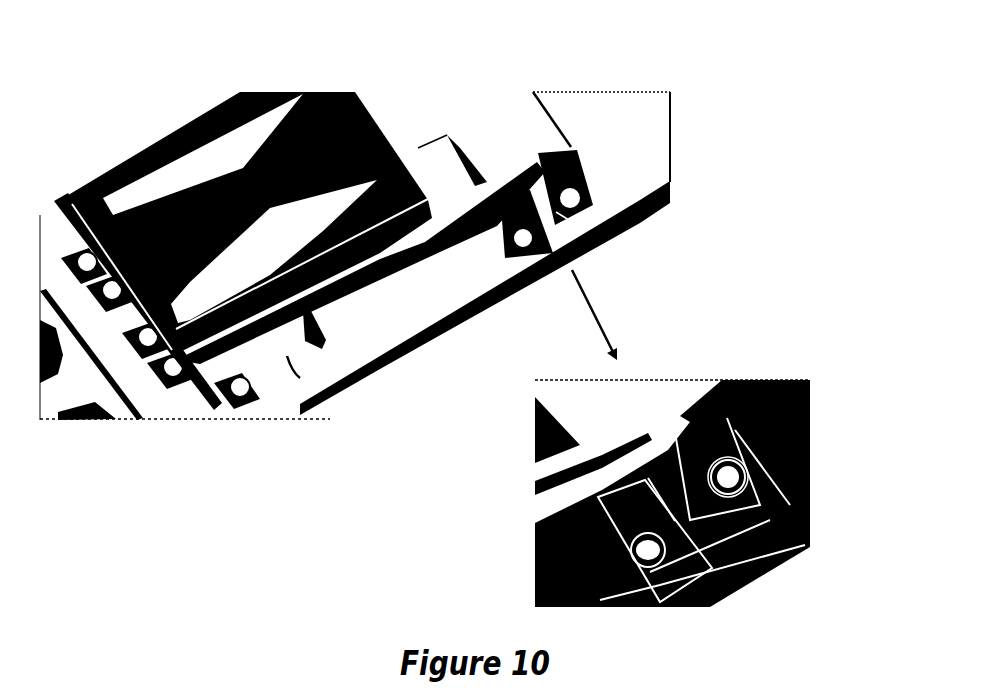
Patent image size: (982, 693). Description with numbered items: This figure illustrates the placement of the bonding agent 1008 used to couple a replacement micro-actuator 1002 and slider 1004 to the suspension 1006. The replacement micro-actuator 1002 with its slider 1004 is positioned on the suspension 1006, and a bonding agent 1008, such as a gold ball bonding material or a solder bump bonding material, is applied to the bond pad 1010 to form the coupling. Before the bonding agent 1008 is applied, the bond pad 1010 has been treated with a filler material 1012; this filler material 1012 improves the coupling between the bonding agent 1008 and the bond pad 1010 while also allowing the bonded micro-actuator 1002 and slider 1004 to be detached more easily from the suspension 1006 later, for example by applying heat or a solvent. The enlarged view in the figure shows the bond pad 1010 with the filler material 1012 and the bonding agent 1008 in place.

The replacement micro-actuator 1002 is at (465, 98).
The slider 1004 is at (323, 100).
The suspension 1006 is at (387, 340).
The bonding agent 1008 is at (725, 460).
The bond pad 1010 is at (585, 232).
The filler material 1012 is at (592, 222).